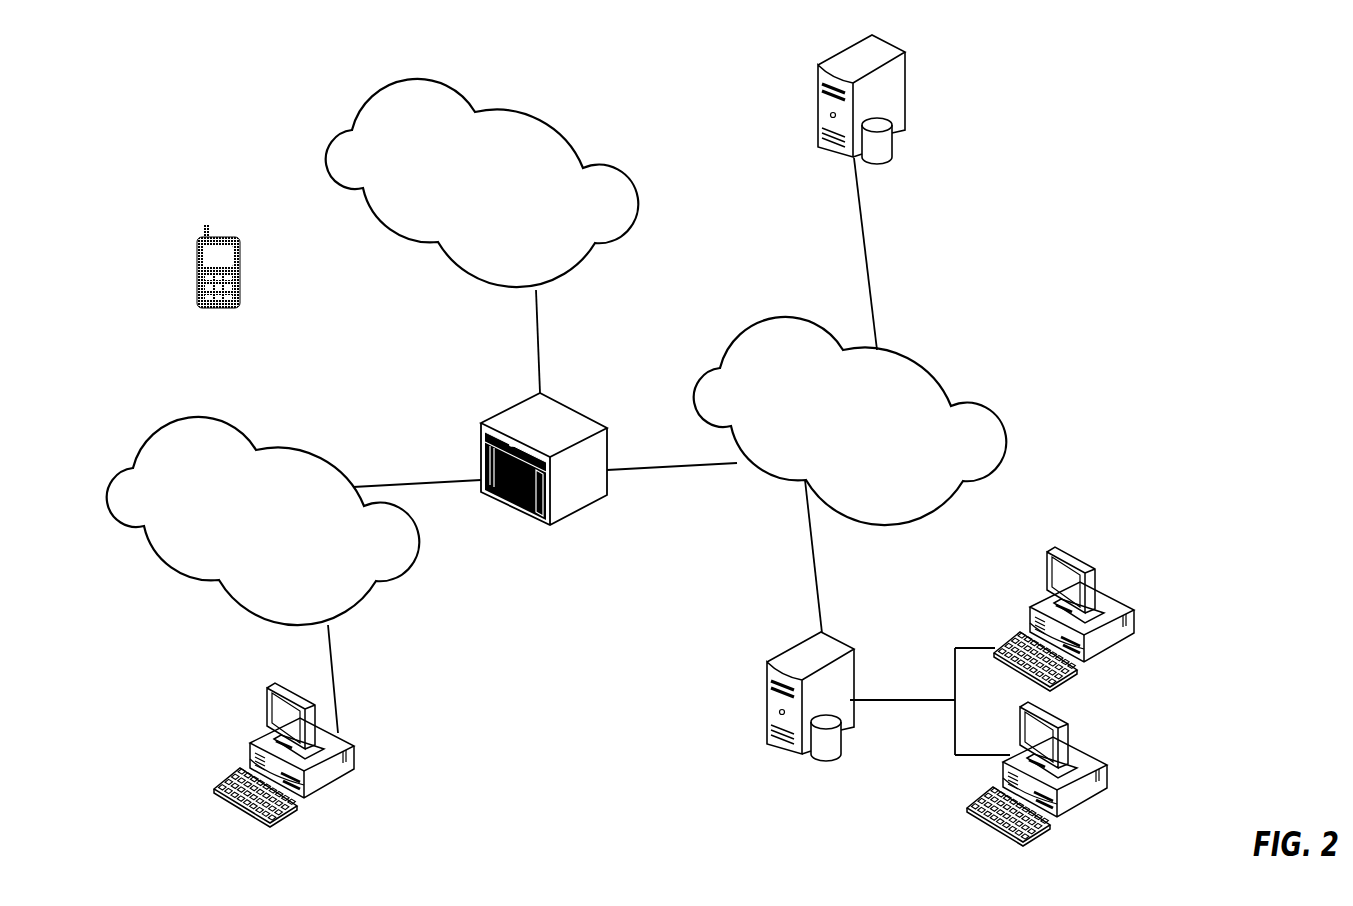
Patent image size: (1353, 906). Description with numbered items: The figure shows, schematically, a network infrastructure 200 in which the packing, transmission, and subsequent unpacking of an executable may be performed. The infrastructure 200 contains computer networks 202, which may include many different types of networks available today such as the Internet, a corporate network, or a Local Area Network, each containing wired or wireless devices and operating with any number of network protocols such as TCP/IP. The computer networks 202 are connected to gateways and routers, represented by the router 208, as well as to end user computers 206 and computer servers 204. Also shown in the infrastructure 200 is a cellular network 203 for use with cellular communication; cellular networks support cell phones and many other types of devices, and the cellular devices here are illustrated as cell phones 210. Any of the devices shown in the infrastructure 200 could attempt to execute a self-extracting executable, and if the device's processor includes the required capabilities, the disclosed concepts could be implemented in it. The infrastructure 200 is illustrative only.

The infrastructure 200 is at (1122, 232).
The computer networks 202 is at (243, 437).
The cellular network 203 is at (528, 113).
The computer servers 204 is at (820, 88).
The end user computers 206 is at (1095, 572).
The gateways and routers 208 is at (567, 403).
The cell phones 210 is at (231, 236).